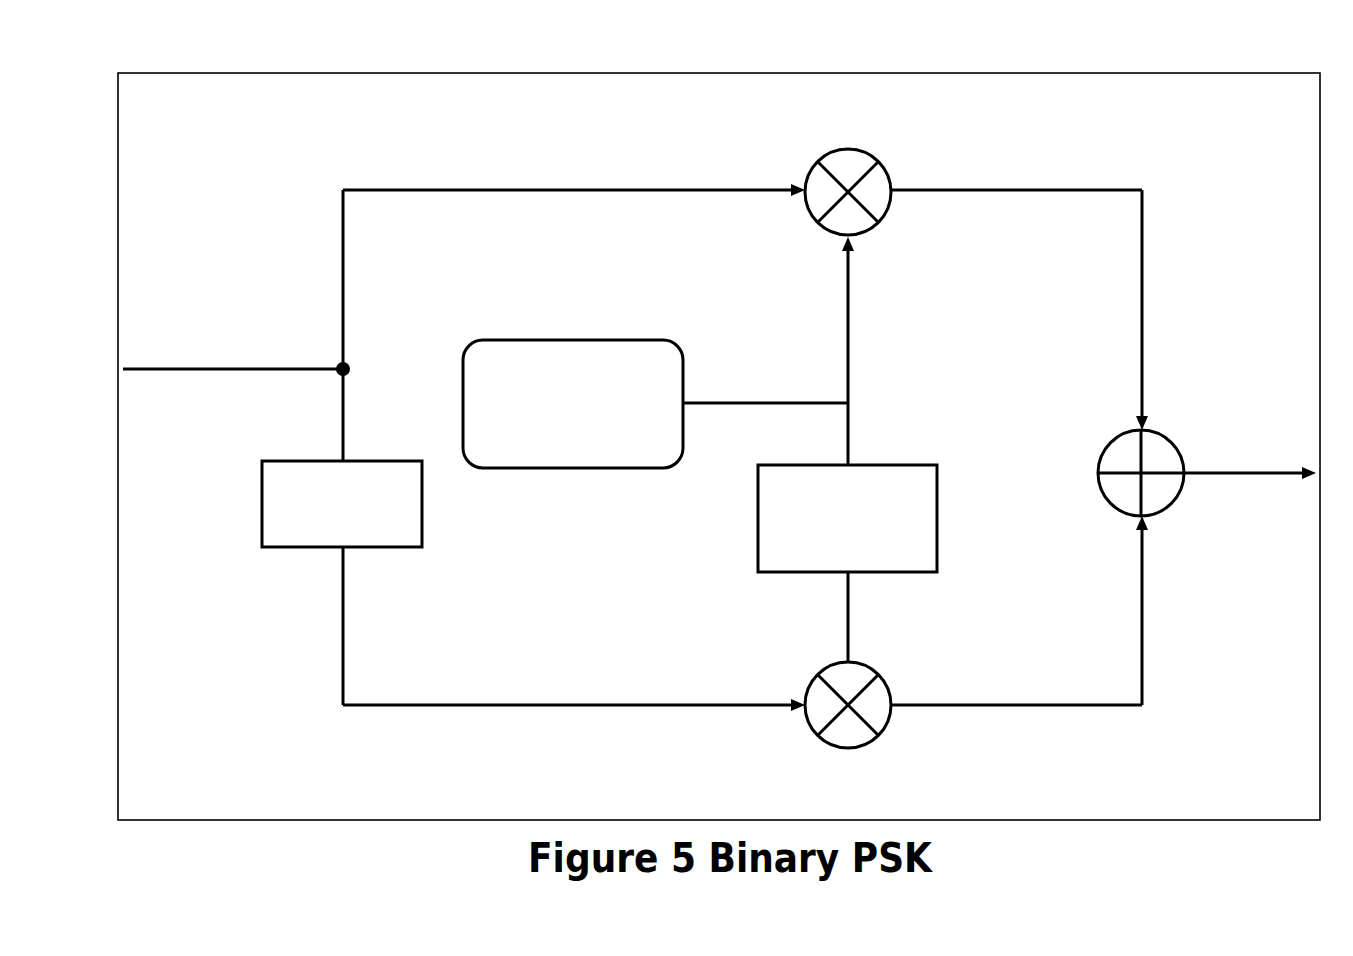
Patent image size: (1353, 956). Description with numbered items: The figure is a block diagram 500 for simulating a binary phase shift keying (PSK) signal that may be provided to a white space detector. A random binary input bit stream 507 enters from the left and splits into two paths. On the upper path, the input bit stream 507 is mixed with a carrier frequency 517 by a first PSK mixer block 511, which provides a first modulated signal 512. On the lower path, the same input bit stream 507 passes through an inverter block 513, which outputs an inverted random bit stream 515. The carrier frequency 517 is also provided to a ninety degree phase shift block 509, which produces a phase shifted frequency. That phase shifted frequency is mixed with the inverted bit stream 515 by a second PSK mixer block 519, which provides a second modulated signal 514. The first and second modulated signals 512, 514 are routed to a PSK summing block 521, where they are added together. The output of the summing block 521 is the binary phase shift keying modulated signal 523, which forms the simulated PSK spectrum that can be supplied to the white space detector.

The binary PSK modulator 500 is at (716, 73).
The random binary input bit stream 507 is at (265, 367).
The 90 degree phase shift block 509 is at (780, 573).
The first PSK mixer block 511 is at (850, 147).
The first modulated signal 512 is at (1143, 263).
The inverter block 513 is at (303, 548).
The second modulated signal 514 is at (1143, 675).
The inverted random bit stream 515 is at (435, 705).
The carrier frequency 517 is at (575, 470).
The second PSK mixer block 519 is at (878, 730).
The PSK summing block 521 is at (1107, 502).
The binary phase shift keying modulated signal 523 is at (1260, 473).